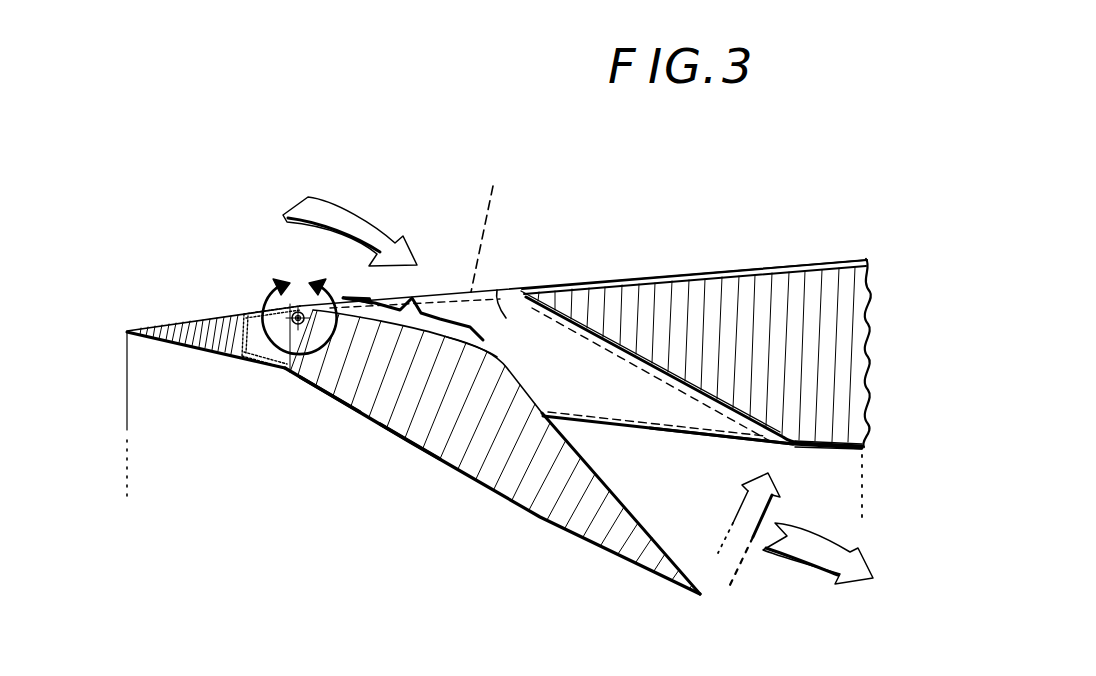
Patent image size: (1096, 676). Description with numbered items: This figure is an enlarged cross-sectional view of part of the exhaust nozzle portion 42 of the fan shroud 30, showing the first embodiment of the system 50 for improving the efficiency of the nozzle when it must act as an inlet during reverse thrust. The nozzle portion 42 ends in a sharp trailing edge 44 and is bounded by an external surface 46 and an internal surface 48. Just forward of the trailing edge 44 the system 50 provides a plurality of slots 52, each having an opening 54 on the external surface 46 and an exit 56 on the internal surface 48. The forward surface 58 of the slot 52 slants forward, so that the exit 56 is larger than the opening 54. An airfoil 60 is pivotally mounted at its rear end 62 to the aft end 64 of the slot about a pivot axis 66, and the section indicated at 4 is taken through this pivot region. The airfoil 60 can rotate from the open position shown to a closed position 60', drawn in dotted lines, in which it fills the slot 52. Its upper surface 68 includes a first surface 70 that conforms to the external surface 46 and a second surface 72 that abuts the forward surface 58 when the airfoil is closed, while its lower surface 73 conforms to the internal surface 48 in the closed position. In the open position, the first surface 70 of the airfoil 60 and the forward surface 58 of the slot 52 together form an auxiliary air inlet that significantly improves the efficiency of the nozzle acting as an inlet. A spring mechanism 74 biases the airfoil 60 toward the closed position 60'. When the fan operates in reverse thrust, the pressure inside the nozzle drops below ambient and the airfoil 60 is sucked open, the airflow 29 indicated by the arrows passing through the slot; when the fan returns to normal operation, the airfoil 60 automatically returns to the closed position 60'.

The airflow direction arrows 29 is at (357, 208).
The fan shroud 30 is at (662, 256).
The section line 4 is at (299, 310).
The exhaust nozzle portion 42 is at (730, 265).
The trailing edge 44 is at (127, 331).
The external surface 46 is at (583, 282).
The internal surface 48 is at (836, 449).
The system 50 is at (438, 178).
The slot 52 is at (497, 290).
The opening 54 is at (452, 287).
The exit 56 is at (705, 443).
The forward surface 58 is at (650, 371).
The airfoil 60 is at (492, 452).
The closed position 60' is at (496, 224).
The rear end 62 is at (335, 398).
The aft end 64 is at (299, 309).
The pivot axis 66 is at (262, 355).
The upper surface 68 is at (497, 353).
The first surface 70 is at (422, 297).
The second surface 72 is at (577, 448).
The lower surface 73 is at (410, 445).
The spring mechanism 74 is at (241, 302).